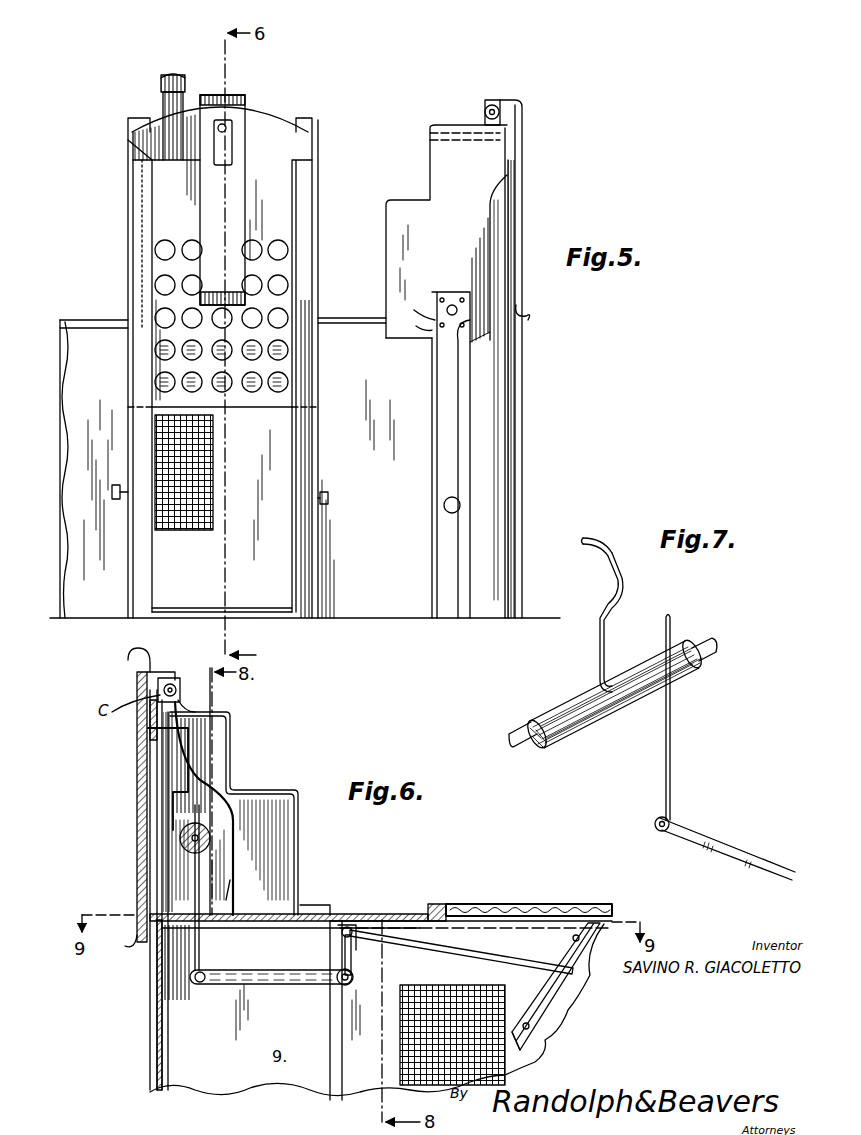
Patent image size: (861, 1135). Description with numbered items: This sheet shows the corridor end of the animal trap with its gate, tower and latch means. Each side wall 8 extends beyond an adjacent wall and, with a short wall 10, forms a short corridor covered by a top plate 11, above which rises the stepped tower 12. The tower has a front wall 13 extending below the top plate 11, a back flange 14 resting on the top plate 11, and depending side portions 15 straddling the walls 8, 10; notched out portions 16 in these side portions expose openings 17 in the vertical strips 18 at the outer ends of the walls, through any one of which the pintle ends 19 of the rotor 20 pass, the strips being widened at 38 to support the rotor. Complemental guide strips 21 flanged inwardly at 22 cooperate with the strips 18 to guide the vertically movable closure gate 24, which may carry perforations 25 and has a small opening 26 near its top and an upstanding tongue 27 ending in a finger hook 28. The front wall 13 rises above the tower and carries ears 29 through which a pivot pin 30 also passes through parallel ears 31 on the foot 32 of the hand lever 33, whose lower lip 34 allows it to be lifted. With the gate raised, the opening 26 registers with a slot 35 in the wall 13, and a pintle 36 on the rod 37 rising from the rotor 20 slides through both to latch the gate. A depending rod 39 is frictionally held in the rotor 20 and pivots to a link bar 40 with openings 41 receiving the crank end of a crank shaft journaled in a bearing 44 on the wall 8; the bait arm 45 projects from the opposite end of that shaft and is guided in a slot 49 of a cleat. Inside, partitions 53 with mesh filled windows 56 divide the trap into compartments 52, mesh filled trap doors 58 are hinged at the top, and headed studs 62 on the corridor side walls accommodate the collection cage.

In FIG. 5, the side wall 8 is at (104, 612).
In FIG. 5, the short wall 10 is at (344, 330).
In FIG. 6, the short wall 10 is at (204, 1078).
In FIG. 6, the top plate 11 is at (250, 900).
In FIG. 5, the tower 12 is at (388, 240).
In FIG. 6, the tower 12 is at (300, 857).
In FIG. 5, the front wall 13 is at (190, 110).
In FIG. 6, the front wall 13 is at (165, 985).
In FIG. 6, the back flange 14 is at (304, 900).
In FIG. 5, the side portion 15 is at (412, 338).
In FIG. 5, the notched out portion 16 is at (462, 345).
In FIG. 5, the opening 17 is at (411, 320).
In FIG. 5, the vertical strip 18 is at (478, 410).
In FIG. 6, the vertical strip 18 is at (160, 1050).
In FIG. 5, the pintle end 19 is at (458, 310).
In FIG. 6, the rotor 20 is at (180, 840).
In FIG. 7, the rotor 20 is at (578, 700).
In FIG. 5, the guide strip 21 is at (128, 200).
In FIG. 5, the inward flange 22 is at (128, 246).
In FIG. 6, the inward flange 22 is at (142, 1028).
In FIG. 5, the closure gate 24 is at (162, 188).
In FIG. 6, the closure gate 24 is at (152, 928).
In FIG. 5, the perforations 25 is at (162, 287).
In FIG. 5, the small opening 26 is at (230, 128).
In FIG. 6, the small opening 26 is at (150, 733).
In FIG. 5, the upstanding tongue 27 is at (163, 96).
In FIG. 5, the finger hook 28 is at (162, 80).
In FIG. 6, the ear 29 is at (190, 703).
In FIG. 5, the pivot pin 30 is at (485, 112).
In FIG. 6, the pivot pin 30 is at (178, 690).
In FIG. 6, the parallel ear 31 is at (180, 680).
In FIG. 5, the foot 32 is at (232, 96).
In FIG. 6, the foot 32 is at (172, 666).
In FIG. 5, the hand lever 33 is at (208, 192).
In FIG. 6, the hand lever 33 is at (137, 800).
In FIG. 5, the lip 34 is at (528, 322).
In FIG. 6, the lip 34 is at (130, 895).
In FIG. 6, the slot 35 is at (178, 748).
In FIG. 6, the pintle 36 is at (214, 704).
In FIG. 7, the pintle 36 is at (604, 544).
In FIG. 6, the rod 37 is at (192, 770).
In FIG. 7, the rod 37 is at (620, 600).
In FIG. 6, the widened portion 38 is at (230, 878).
In FIG. 6, the depending rod 39 is at (205, 958).
In FIG. 7, the depending rod 39 is at (673, 765).
In FIG. 6, the link bar 40 is at (290, 982).
In FIG. 7, the link bar 40 is at (728, 848).
In FIG. 6, the opening 41 is at (336, 990).
In FIG. 6, the bearing 44 is at (392, 890).
In FIG. 6, the bait arm 45 is at (470, 950).
In FIG. 6, the slot 49 is at (530, 1000).
In FIG. 6, the compartment 52 is at (532, 1043).
In FIG. 5, the partition 53 is at (222, 596).
In FIG. 6, the partition 53 is at (452, 929).
In FIG. 5, the mesh filled window 56 is at (195, 530).
In FIG. 6, the mesh filled window 56 is at (458, 990).
In FIG. 6, the trap door 58 is at (500, 895).
In FIG. 5, the headed stud 62 is at (110, 475).